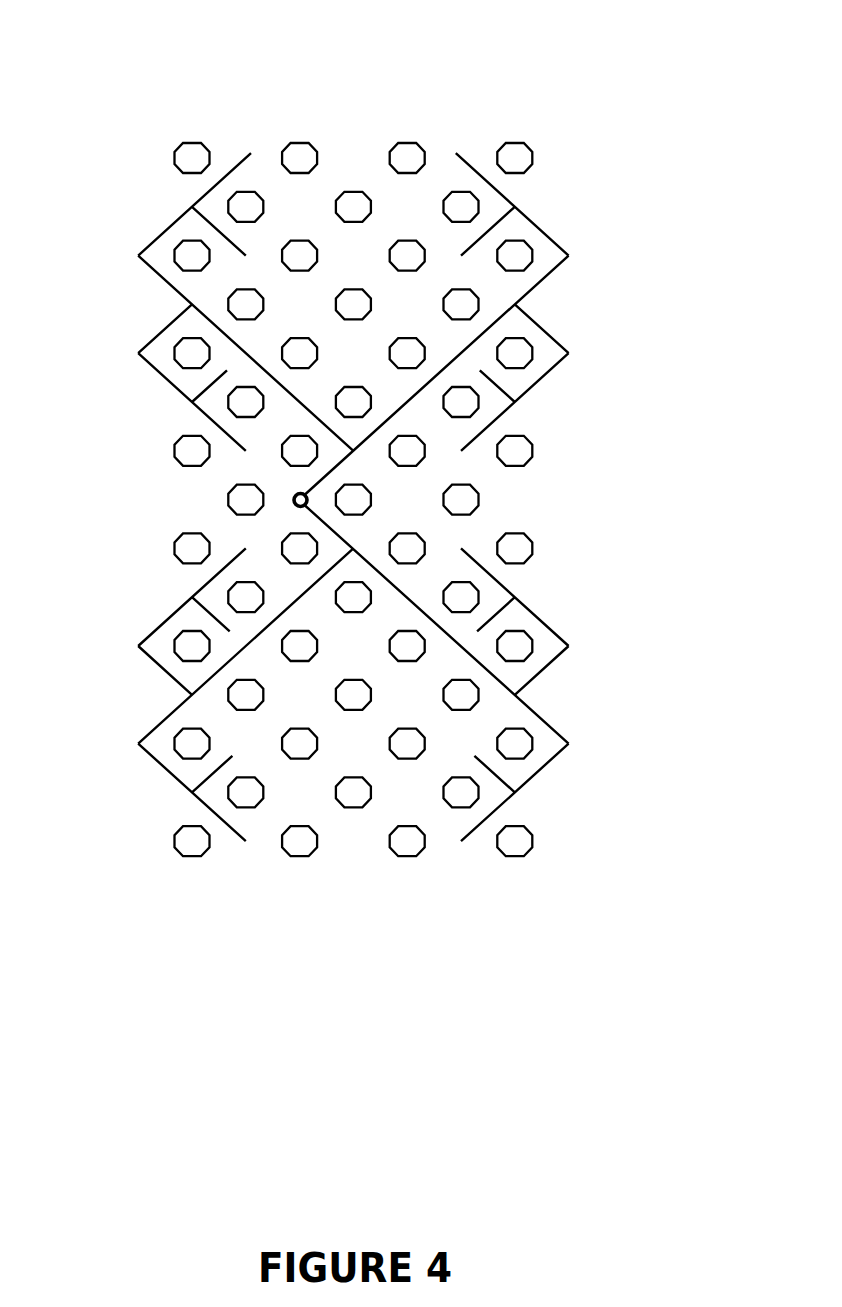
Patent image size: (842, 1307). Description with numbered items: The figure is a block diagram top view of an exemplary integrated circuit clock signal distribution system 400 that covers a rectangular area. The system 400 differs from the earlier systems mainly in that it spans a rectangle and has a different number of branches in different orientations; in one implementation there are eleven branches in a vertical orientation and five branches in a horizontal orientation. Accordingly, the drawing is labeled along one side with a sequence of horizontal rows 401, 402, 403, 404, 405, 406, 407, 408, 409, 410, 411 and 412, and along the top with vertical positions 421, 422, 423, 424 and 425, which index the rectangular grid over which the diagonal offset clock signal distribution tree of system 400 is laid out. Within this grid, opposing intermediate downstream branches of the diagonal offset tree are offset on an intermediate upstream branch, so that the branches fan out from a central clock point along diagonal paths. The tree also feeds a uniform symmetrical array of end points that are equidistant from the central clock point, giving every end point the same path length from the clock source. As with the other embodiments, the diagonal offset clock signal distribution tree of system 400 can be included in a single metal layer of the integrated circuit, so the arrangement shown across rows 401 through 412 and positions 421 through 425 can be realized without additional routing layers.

The integrated circuit clock signal distribution system 400 is at (72, 32).
The row of tiles 401 is at (615, 792).
The row of tiles 402 is at (615, 744).
The row of tiles 403 is at (615, 695).
The row of tiles 404 is at (615, 646).
The row of tiles 405 is at (615, 597).
The row of tiles 406 is at (615, 500).
The row of tiles 407 is at (615, 451).
The row of tiles 408 is at (615, 402).
The row of tiles 409 is at (615, 353).
The row of tiles 410 is at (615, 304).
The row of tiles 411 is at (615, 256).
The row of tiles 412 is at (615, 207).
The left column of chevron marks 421 is at (125, 132).
The column of tiles 422 is at (199, 132).
The center column of tiles 423 is at (354, 132).
The column of tiles 424 is at (508, 132).
The right column of chevron marks 425 is at (580, 133).